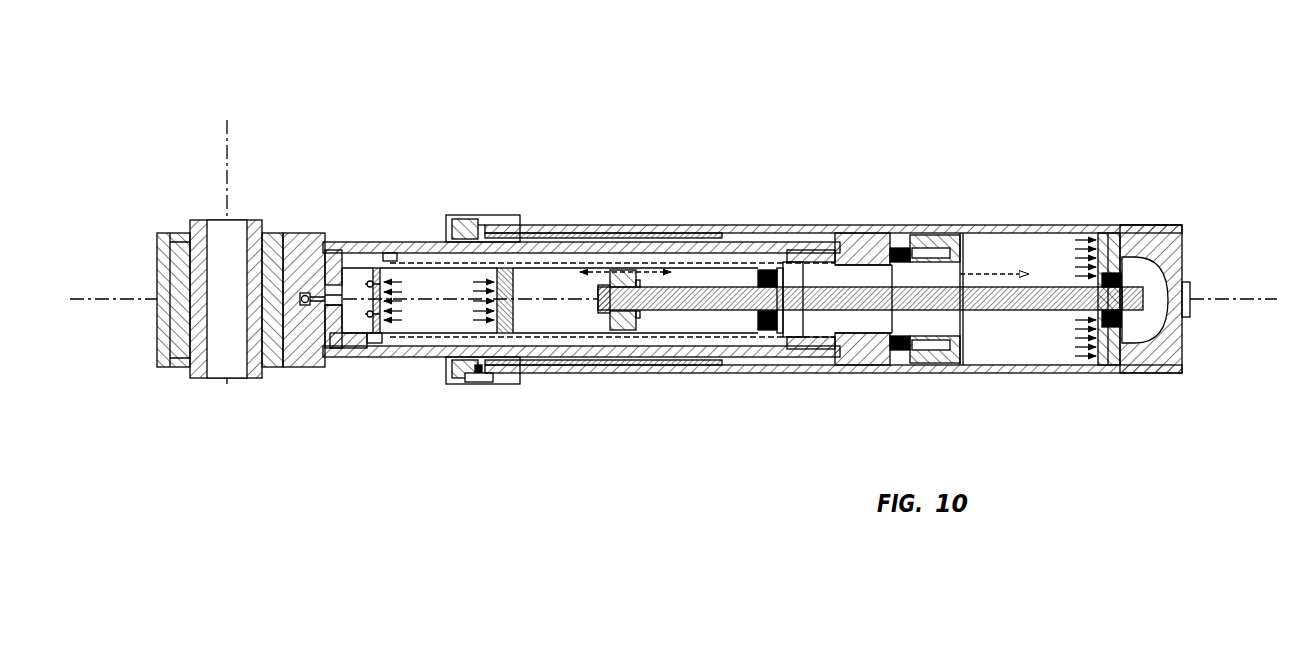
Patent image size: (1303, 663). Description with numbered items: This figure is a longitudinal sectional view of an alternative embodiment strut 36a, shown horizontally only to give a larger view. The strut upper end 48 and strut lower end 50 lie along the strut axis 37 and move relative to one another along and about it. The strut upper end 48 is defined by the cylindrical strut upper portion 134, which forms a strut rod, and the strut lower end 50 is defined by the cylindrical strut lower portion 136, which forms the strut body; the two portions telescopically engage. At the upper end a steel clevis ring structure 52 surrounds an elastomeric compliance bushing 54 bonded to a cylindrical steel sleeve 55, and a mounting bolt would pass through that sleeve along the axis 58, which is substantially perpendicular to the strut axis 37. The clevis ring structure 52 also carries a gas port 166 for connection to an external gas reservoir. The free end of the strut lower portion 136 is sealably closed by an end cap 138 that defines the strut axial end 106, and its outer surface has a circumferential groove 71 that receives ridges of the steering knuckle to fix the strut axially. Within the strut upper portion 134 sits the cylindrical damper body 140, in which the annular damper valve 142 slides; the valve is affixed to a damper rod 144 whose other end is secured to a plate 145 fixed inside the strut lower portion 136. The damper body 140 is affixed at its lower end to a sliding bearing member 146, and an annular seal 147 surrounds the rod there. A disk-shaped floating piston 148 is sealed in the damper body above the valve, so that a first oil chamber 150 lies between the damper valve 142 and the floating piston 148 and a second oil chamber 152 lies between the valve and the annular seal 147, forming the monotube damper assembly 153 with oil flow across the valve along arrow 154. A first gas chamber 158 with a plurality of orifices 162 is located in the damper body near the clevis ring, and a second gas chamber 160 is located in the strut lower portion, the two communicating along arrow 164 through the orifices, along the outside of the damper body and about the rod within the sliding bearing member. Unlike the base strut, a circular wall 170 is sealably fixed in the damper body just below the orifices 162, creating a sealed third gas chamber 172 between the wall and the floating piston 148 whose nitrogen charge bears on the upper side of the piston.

The strut 36a is at (897, 112).
The strut axis 37 is at (115, 300).
The strut upper end 48 is at (342, 227).
The strut lower end 50 is at (1056, 219).
The clevis ring structure 52 is at (157, 238).
The bushing 54 is at (182, 218).
The sleeve 55 is at (260, 222).
The axis 58 is at (228, 158).
The circumferential groove 71 is at (1152, 224).
The strut axial end 106 is at (1187, 268).
The strut upper portion 134 is at (357, 352).
The strut lower portion 136 is at (1080, 372).
The end cap 138 is at (1173, 353).
The damper body 140 is at (587, 340).
The damper valve 142 is at (620, 323).
The damper rod 144 is at (1010, 312).
The plate 145 is at (1112, 363).
The sliding bearing member 146 is at (865, 350).
The annular seal 147 is at (772, 333).
The floating piston 148 is at (507, 333).
The first oil chamber 150 is at (565, 320).
The second oil chamber 152 is at (733, 280).
The monotube damper assembly 153 is at (480, 268).
The arrow 154 is at (652, 270).
The first gas chamber 158 is at (355, 322).
The second gas chamber 160 is at (982, 354).
The orifices 162 is at (383, 283).
The arrow 164 is at (997, 274).
The gas port 166 is at (309, 293).
The circular wall 170 is at (383, 323).
The third gas chamber 172 is at (420, 318).